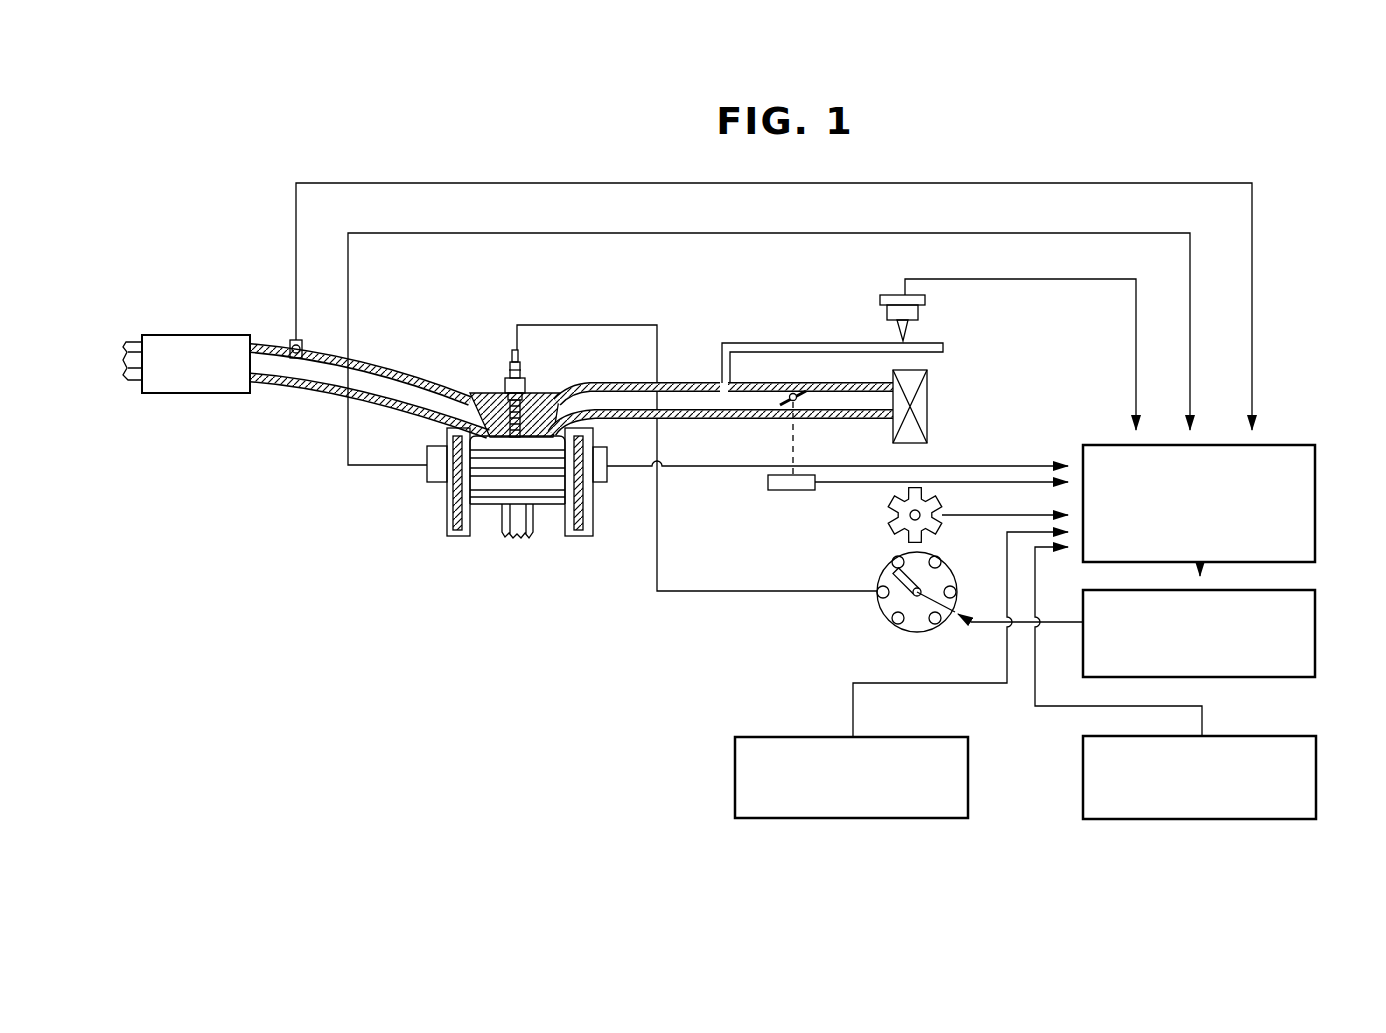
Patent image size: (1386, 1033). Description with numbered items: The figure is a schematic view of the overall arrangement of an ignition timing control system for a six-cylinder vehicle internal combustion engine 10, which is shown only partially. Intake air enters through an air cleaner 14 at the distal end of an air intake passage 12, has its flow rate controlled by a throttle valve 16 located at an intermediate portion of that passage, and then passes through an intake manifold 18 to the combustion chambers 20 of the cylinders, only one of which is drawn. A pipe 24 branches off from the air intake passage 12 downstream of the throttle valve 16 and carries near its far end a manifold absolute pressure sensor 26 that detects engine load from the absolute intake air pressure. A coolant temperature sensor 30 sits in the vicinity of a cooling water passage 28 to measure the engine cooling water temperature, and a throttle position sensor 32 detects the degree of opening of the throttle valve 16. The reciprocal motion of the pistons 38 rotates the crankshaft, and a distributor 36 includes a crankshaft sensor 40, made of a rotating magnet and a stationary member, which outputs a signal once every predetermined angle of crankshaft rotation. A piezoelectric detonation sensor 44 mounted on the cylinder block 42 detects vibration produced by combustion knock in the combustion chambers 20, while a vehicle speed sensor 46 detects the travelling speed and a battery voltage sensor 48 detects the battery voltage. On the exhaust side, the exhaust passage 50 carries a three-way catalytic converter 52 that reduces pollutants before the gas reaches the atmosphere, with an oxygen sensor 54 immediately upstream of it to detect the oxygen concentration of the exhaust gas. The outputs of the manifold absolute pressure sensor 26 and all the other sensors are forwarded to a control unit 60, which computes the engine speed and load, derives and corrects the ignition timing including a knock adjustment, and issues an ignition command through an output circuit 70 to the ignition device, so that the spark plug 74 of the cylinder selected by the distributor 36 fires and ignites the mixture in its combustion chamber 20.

The internal combustion engine 10 is at (769, 416).
The air intake passage 12 is at (782, 404).
The air cleaner 14 is at (927, 412).
The throttle valve 16 is at (803, 395).
The intake manifold 18 is at (569, 384).
The combustion chamber 20 is at (512, 444).
The pipe 24 is at (806, 343).
The manifold absolute pressure sensor 26 is at (884, 296).
The cooling water passage 28 is at (585, 530).
The coolant temperature sensor 30 is at (600, 476).
The throttle position sensor 32 is at (780, 490).
The distributor 36 is at (878, 612).
The piston 38 is at (545, 520).
The crankshaft sensor 40 is at (893, 527).
The cylinder block 42 is at (596, 433).
The piezoelectric detonation sensor 44 is at (432, 470).
The vehicle speed sensor 46 is at (734, 778).
The battery voltage sensor 48 is at (1318, 776).
The exhaust passage 50 is at (446, 380).
The three-way catalytic converter 52 is at (188, 336).
The oxygen sensor 54 is at (290, 344).
The control unit 60 is at (1316, 506).
The output circuit 70 is at (1308, 628).
The spark plug 74 is at (510, 358).